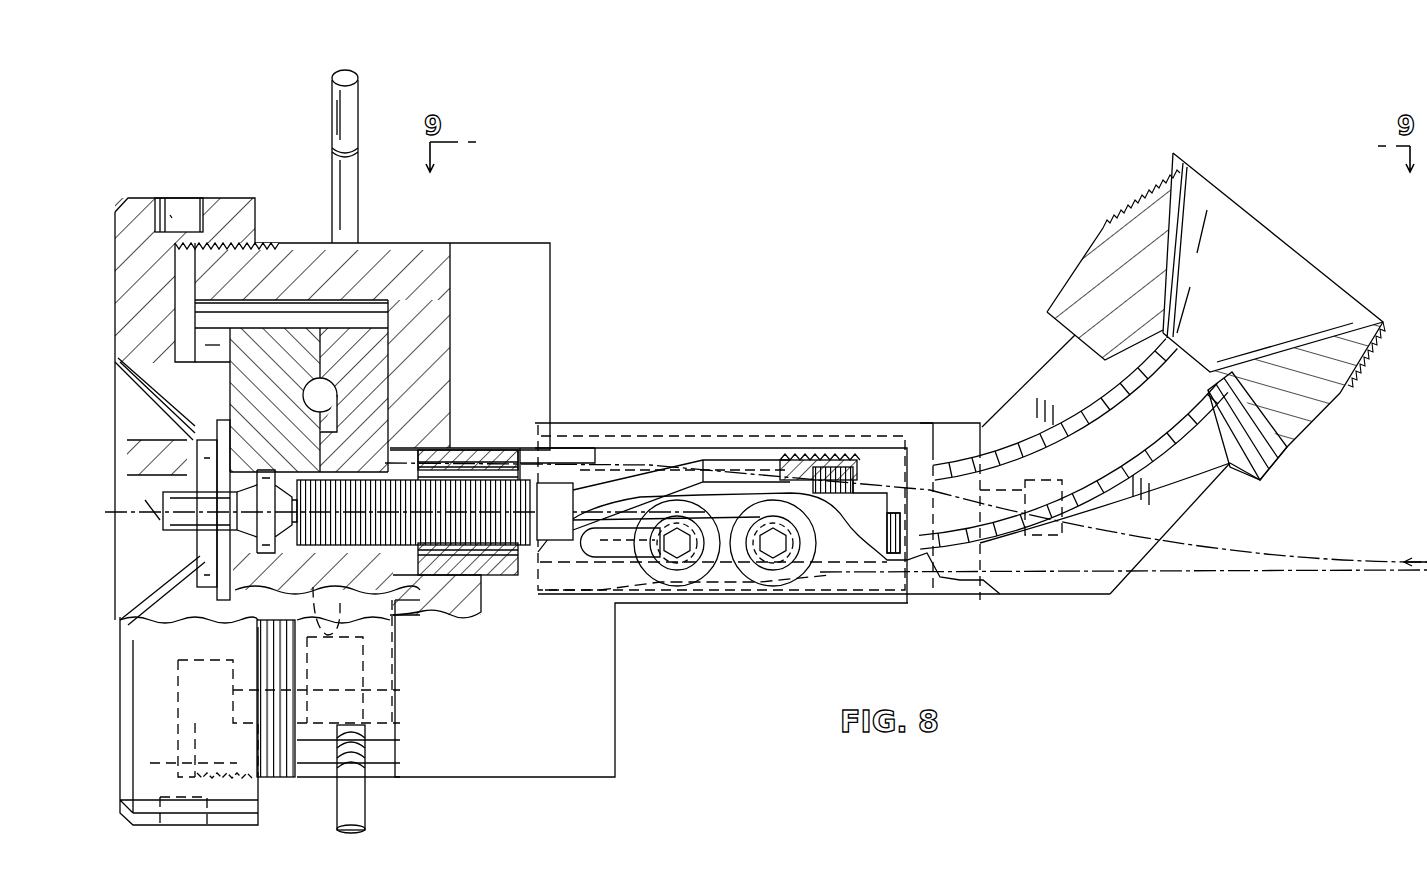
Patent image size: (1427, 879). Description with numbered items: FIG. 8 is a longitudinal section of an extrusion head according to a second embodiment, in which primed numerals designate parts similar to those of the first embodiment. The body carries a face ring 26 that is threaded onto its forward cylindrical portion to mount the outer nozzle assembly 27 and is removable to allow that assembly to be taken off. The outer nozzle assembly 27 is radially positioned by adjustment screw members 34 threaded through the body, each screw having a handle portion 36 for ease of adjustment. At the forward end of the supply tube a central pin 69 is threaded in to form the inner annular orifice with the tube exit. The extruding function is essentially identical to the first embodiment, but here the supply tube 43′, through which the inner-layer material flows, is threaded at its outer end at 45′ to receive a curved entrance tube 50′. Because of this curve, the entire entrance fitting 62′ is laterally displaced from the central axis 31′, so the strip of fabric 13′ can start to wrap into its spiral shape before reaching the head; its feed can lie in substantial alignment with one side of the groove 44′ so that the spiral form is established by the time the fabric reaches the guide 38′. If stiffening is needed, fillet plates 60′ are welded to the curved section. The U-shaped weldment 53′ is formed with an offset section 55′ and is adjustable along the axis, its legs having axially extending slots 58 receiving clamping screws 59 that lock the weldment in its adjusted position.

The fabric 13′ is at (1283, 572).
The face ring 26 is at (143, 752).
The outer nozzle assembly 27 is at (284, 326).
The central axis 31′ is at (137, 512).
The adjustment screw members 34 is at (358, 207).
The handle portion 36 is at (357, 106).
The fabric guide 38′ is at (480, 458).
The supply tube 43′ is at (727, 458).
The groove 44′ is at (500, 548).
The threaded outer end 45′ is at (863, 460).
The curved entrance tube 50′ is at (1080, 413).
The U-shaped weldment 53′ is at (966, 420).
The offset section 55′ is at (1200, 490).
The axially extending slots 58 is at (592, 550).
The clamping screws 59 is at (760, 562).
The fillet plates 60′ is at (1047, 400).
The entrance fitting 62′ is at (1328, 405).
The central pin 69 is at (183, 543).